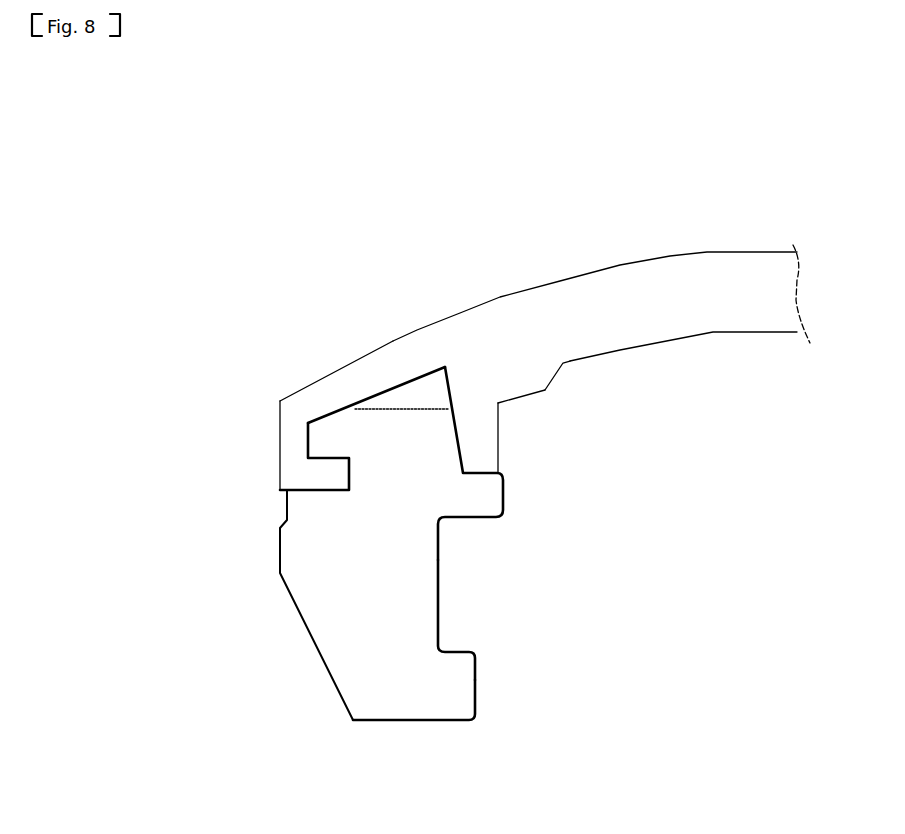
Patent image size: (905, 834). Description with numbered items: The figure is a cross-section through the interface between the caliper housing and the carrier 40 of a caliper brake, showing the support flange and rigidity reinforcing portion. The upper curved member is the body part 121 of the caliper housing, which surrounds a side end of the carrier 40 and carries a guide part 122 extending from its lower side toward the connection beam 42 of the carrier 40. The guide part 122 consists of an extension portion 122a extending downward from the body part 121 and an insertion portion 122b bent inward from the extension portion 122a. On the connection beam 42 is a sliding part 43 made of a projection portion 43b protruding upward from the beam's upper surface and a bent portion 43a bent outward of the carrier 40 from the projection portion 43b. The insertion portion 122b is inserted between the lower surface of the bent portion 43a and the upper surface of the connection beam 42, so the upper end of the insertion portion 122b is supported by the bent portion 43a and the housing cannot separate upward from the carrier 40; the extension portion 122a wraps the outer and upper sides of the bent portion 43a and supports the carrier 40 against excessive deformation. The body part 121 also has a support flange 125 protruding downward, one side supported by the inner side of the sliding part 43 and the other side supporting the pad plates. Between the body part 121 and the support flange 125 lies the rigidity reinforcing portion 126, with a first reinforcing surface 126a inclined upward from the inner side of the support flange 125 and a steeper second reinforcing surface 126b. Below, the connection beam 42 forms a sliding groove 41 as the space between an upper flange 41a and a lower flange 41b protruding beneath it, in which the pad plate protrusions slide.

The body part 121 is at (695, 280).
The guide part 122 is at (252, 418).
The extension portion 122a is at (293, 438).
The insertion portion 122b is at (323, 478).
The support flange 125 is at (482, 440).
The rigidity reinforcing portion 126 is at (528, 288).
The first reinforcing surface 126a is at (510, 393).
The second reinforcing surface 126b is at (545, 395).
The carrier 40 is at (282, 592).
The sliding groove 41 is at (333, 622).
The upper flange 41a is at (478, 498).
The lower flange 41b is at (458, 693).
The connection beam 42 is at (405, 457).
The sliding part 43 is at (351, 373).
The bent portion 43a is at (318, 438).
The projection portion 43b is at (356, 470).